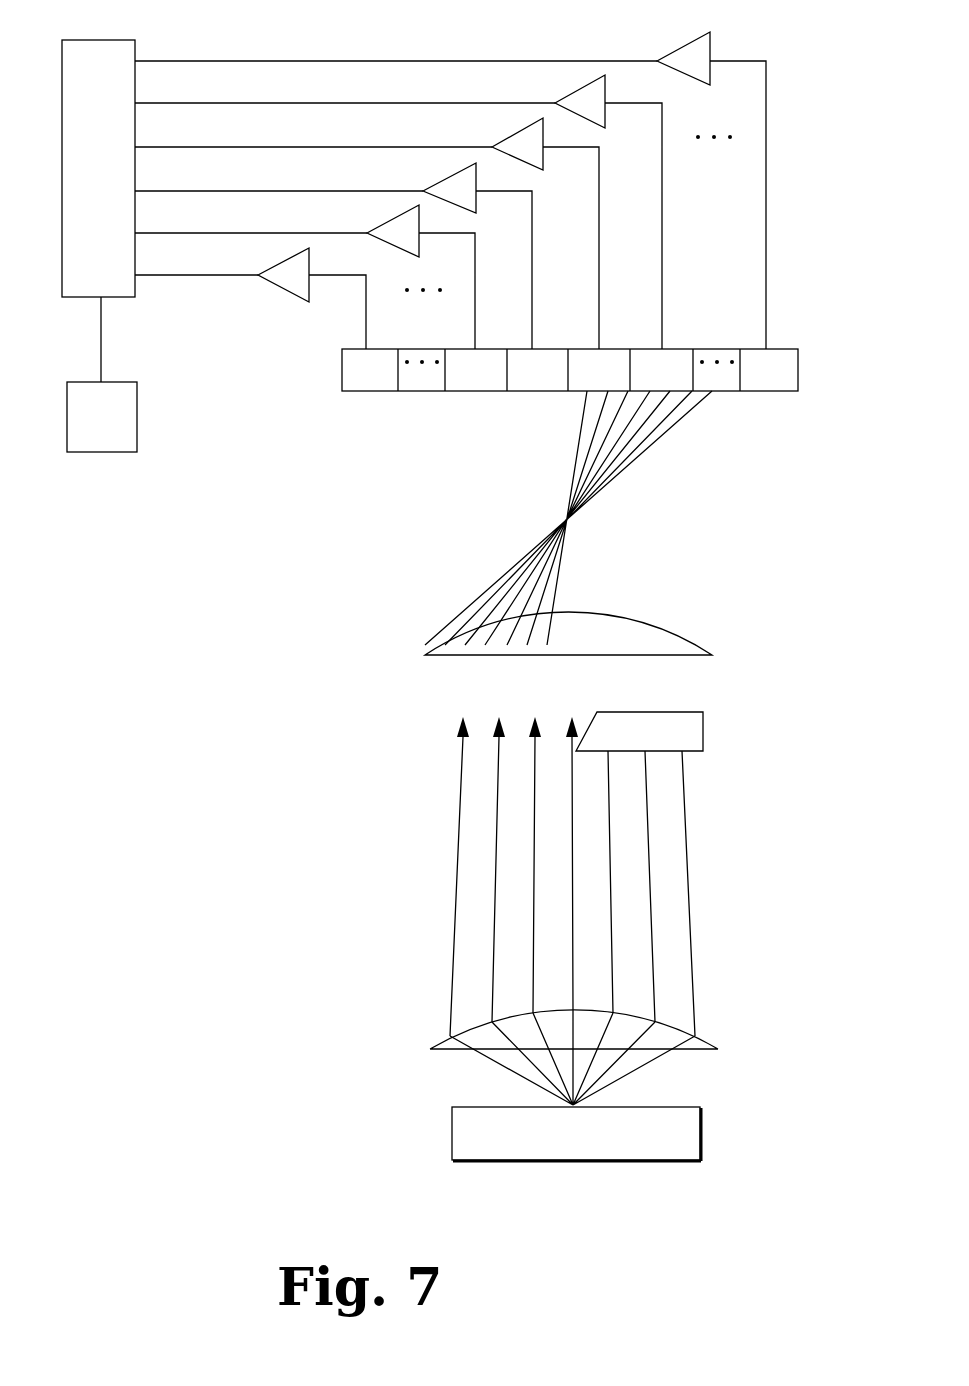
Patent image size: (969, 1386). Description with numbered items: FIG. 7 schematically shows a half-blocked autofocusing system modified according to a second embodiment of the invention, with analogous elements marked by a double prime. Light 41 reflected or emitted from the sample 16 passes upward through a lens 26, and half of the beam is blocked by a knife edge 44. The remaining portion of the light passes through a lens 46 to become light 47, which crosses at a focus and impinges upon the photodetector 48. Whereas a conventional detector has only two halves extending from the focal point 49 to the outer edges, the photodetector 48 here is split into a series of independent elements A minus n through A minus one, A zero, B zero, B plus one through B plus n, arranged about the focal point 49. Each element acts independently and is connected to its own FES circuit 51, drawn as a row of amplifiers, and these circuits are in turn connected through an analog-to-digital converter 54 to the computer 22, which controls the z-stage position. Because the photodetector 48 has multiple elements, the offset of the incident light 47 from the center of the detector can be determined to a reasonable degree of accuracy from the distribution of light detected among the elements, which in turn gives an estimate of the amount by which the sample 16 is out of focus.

The analog-to-digital converter 54 is at (107, 40).
The computer 22 is at (102, 432).
The FES circuit 51 is at (712, 42).
The photodetector 48 is at (798, 372).
The focal point 49 is at (568, 393).
The light 47 is at (497, 557).
The lens 46 is at (624, 667).
The knife edge 44 is at (697, 732).
The light 41 is at (442, 834).
The lens 26 is at (450, 1038).
The sample 16 is at (452, 1135).